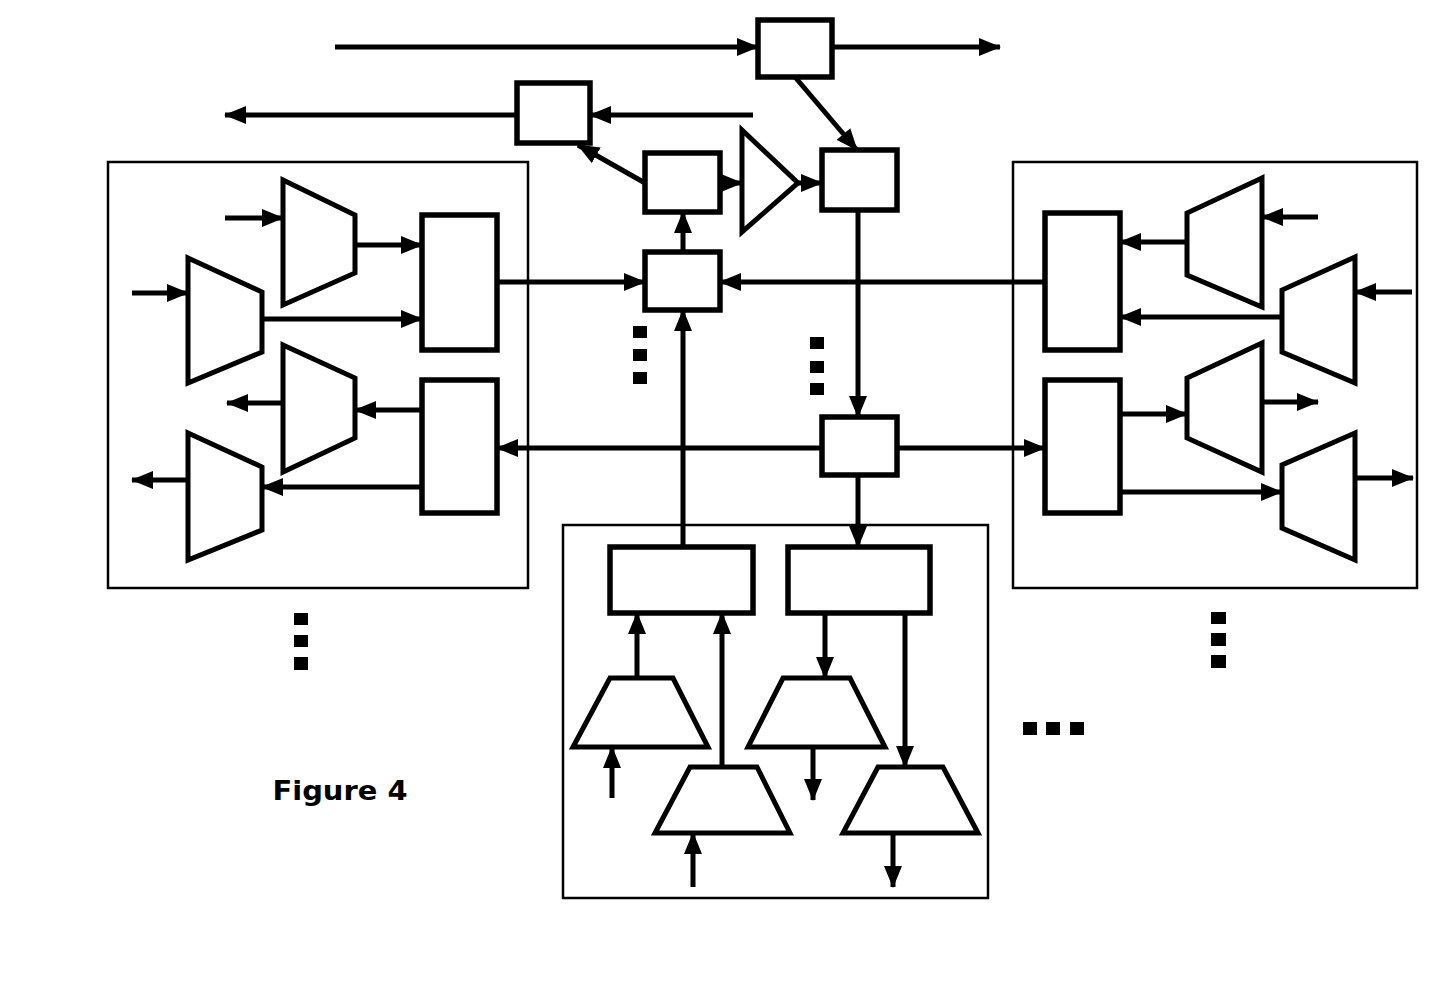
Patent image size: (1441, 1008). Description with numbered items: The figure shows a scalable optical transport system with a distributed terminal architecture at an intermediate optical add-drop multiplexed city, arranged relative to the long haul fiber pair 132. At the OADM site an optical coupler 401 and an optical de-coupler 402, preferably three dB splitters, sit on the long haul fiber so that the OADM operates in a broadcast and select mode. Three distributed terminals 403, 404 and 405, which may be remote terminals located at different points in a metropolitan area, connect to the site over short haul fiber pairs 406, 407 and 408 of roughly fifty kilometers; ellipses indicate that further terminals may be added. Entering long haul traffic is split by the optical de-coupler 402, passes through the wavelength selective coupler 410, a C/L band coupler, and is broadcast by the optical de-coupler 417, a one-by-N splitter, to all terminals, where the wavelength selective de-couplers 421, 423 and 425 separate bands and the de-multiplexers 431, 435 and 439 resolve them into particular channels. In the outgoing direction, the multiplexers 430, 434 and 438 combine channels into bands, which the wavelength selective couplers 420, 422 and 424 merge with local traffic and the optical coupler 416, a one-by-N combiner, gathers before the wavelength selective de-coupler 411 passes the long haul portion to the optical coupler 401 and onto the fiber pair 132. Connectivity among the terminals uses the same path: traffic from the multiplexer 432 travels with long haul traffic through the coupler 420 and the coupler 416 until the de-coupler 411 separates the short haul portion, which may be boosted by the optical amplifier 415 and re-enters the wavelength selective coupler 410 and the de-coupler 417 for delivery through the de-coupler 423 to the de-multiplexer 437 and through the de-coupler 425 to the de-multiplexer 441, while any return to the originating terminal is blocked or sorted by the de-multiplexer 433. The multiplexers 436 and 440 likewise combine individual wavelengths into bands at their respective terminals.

The long haul fiber pair 132 is at (612, 81).
The optical coupler 401 is at (581, 133).
The optical de-coupler 402 is at (807, 85).
The distributed terminal 403 is at (318, 416).
The distributed terminal 404 is at (775, 711).
The distributed terminal 405 is at (1215, 448).
The short haul fiber pair 406 is at (572, 333).
The short haul fiber pair 407 is at (740, 428).
The short haul fiber pair 408 is at (907, 366).
The wavelength selective coupler 410 is at (859, 283).
The wavelength selective de-coupler 411 is at (693, 182).
The optical amplifier 415 is at (782, 185).
The optical coupler 416 is at (845, 261).
The optical de-coupler 417 is at (771, 482).
The wavelength selective coupler 420 is at (459, 282).
The wavelength selective de-coupler 421 is at (379, 446).
The wavelength selective coupler 422 is at (681, 580).
The wavelength selective de-coupler 423 is at (859, 657).
The wavelength selective coupler 424 is at (1082, 281).
The wavelength selective de-coupler 425 is at (1163, 446).
The multiplexer 430 is at (323, 242).
The de-multiplexer 431 is at (291, 408).
The multiplexer 432 is at (277, 320).
The de-multiplexer 433 is at (197, 496).
The multiplexer 434 is at (640, 705).
The de-multiplexer 435 is at (816, 739).
The multiplexer 436 is at (722, 750).
The de-multiplexer 437 is at (910, 827).
The multiplexer 438 is at (1219, 242).
The de-multiplexer 439 is at (1252, 407).
The multiplexer 440 is at (1266, 320).
The de-multiplexer 441 is at (1347, 496).